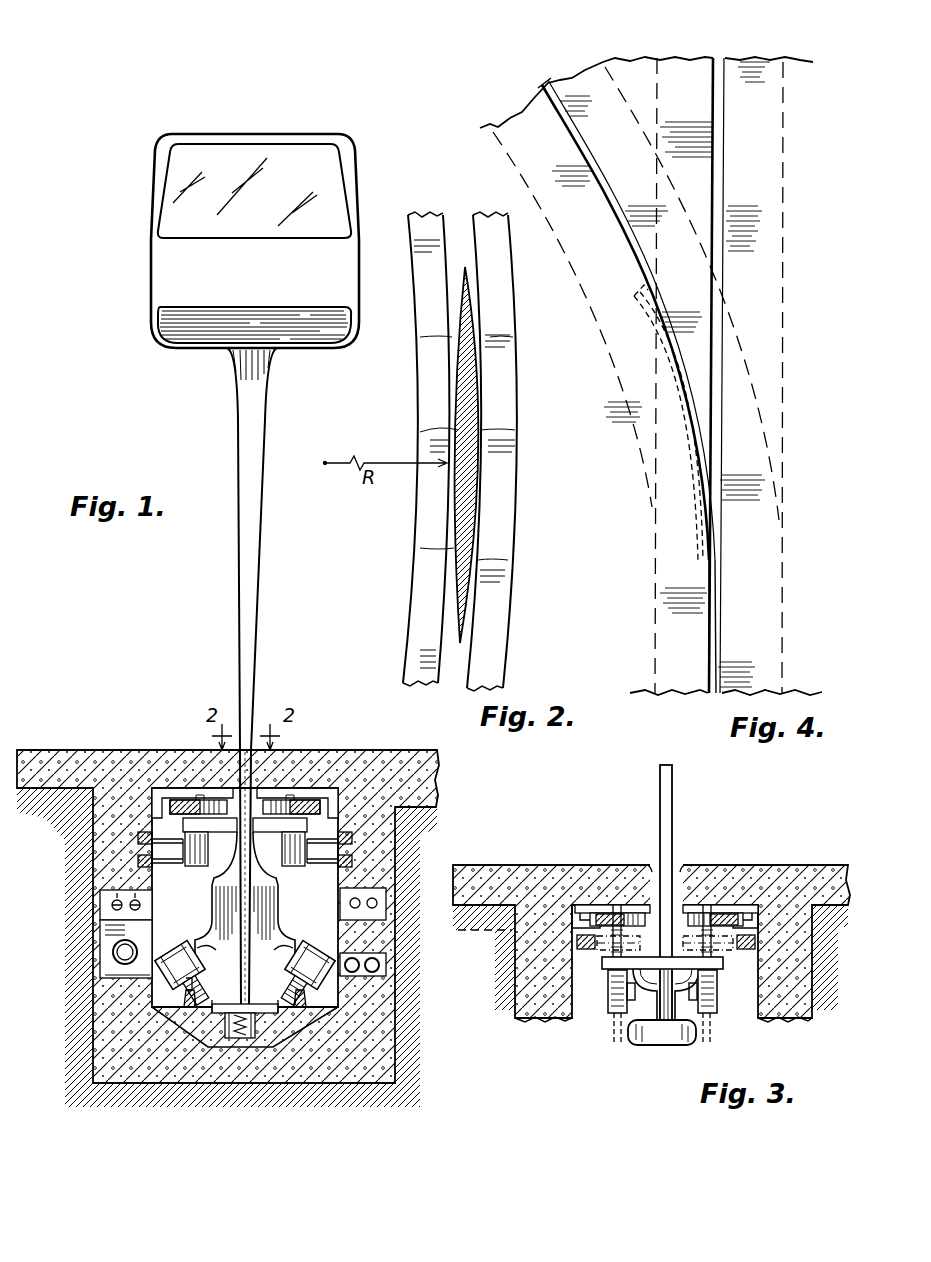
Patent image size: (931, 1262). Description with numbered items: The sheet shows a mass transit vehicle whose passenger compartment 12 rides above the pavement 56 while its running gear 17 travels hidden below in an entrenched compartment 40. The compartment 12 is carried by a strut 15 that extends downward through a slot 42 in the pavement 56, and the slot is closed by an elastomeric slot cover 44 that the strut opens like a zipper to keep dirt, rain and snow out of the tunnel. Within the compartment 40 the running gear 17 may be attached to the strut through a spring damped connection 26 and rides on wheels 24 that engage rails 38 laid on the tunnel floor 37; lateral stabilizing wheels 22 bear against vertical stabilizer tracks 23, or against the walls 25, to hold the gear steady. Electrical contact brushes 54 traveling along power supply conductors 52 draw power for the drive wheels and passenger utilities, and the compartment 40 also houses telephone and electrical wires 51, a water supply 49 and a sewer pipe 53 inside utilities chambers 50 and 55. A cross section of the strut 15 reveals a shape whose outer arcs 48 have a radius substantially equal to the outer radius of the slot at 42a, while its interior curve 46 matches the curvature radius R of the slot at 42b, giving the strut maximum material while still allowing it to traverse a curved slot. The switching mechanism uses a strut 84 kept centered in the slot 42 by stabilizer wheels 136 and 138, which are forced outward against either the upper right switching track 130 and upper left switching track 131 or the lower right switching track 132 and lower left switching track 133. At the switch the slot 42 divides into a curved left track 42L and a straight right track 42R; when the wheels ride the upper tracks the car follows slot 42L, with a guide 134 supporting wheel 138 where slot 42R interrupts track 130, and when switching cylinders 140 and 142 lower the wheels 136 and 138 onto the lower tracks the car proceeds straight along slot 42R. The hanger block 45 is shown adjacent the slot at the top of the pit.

In FIG. 1, the passenger compartment 12 is at (293, 158).
In FIG. 1, the strut 15 is at (240, 414).
In FIG. 2, the strut 15 is at (464, 355).
In FIG. 1, the running gear 17 is at (272, 903).
In FIG. 1, the lateral stabilizing wheels 22 is at (180, 792).
In FIG. 1, the vertical stabilizer tracks 23 is at (172, 800).
In FIG. 1, the wheels 24 is at (190, 1018).
In FIG. 1, the walls 25 is at (100, 815).
In FIG. 1, the spring damped connection 26 is at (240, 1040).
In FIG. 1, the tunnel floor 37 is at (297, 1030).
In FIG. 1, the rails 38 is at (152, 1007).
In FIG. 1, the entrenched compartment 40 is at (346, 933).
In FIG. 1, the slot 42 is at (312, 800).
In FIG. 4, the slot 42 is at (718, 605).
In FIG. 3, the slot 42 is at (683, 888).
In FIG. 2, the outer radius of the slot 42a is at (470, 615).
In FIG. 2, the slot curvature 42b is at (438, 613).
In FIG. 4, the left slot track 42L is at (618, 216).
In FIG. 4, the right slot track 42R is at (723, 187).
In FIG. 1, the slot cover 44 is at (273, 752).
In FIG. 1, the hanger block 45 is at (230, 752).
In FIG. 2, the interior curve 46 is at (458, 430).
In FIG. 2, the arcs 48 is at (452, 337).
In FIG. 1, the water supply 49 is at (386, 962).
In FIG. 1, the utilities chamber 50 is at (352, 946).
In FIG. 1, the telephone and electrical wires 51 is at (110, 905).
In FIG. 1, the power supply conductors 52 is at (138, 858).
In FIG. 1, the sewer pipe 53 is at (115, 950).
In FIG. 1, the electrical contact brushes 54 is at (152, 856).
In FIG. 1, the utilities chamber 55 is at (105, 928).
In FIG. 1, the pavement 56 is at (40, 752).
In FIG. 3, the strut 84 is at (660, 783).
In FIG. 4, the upper right switching track 130 is at (580, 72).
In FIG. 3, the upper right switching track 130 is at (783, 864).
In FIG. 4, the upper left switching track 131 is at (541, 150).
In FIG. 3, the upper left switching track 131 is at (580, 922).
In FIG. 4, the lower right switching track 132 is at (786, 109).
In FIG. 3, the lower right switching track 132 is at (750, 951).
In FIG. 4, the lower left switching track 133 is at (660, 96).
In FIG. 3, the lower left switching track 133 is at (582, 951).
In FIG. 4, the guide 134 is at (644, 292).
In FIG. 3, the guide 134 is at (648, 920).
In FIG. 3, the stabilizer wheel 136 is at (728, 915).
In FIG. 3, the stabilizer wheel 138 is at (605, 915).
In FIG. 3, the switching cylinder 140 is at (715, 1008).
In FIG. 3, the switching cylinder 142 is at (610, 1005).